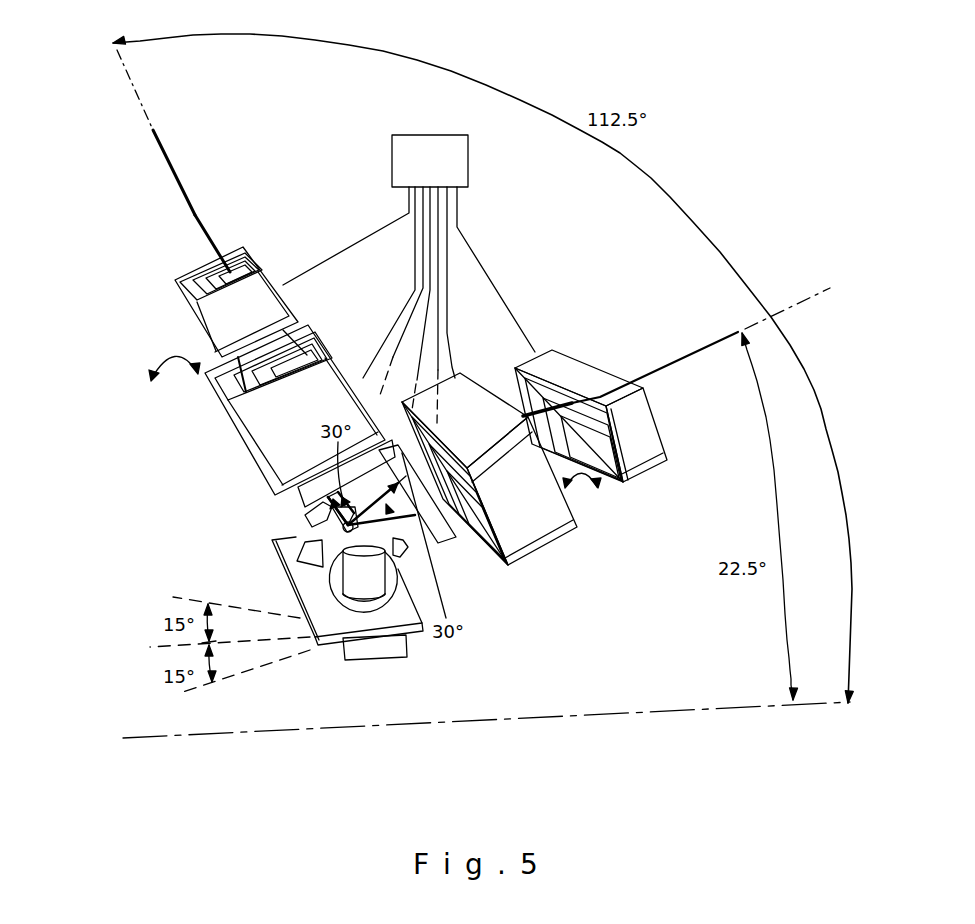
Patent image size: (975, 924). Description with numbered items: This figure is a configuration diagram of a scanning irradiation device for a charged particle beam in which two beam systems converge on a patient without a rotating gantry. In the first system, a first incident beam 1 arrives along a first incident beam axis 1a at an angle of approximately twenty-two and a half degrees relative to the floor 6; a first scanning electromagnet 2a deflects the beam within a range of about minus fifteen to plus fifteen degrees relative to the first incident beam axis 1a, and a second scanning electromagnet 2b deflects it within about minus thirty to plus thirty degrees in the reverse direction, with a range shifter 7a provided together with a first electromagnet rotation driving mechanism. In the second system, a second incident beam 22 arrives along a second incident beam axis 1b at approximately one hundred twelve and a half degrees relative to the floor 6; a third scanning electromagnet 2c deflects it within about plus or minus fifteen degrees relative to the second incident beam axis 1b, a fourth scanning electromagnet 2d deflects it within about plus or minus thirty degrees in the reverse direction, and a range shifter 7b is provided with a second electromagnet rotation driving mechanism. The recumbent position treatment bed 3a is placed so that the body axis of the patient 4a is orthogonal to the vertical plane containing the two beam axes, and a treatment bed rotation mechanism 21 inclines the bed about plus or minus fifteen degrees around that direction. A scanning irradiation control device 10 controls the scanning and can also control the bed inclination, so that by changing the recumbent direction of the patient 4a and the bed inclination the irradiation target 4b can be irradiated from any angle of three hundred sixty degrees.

The first incident beam 1 is at (665, 365).
The first incident beam axis 1a is at (692, 347).
The second incident beam axis 1b is at (182, 180).
The first scanning electromagnet 2a is at (660, 443).
The second scanning electromagnet 2b is at (550, 520).
The third scanning electromagnet 2c is at (212, 325).
The fourth scanning electromagnet 2d is at (275, 448).
The recumbent position treatment bed 3a is at (338, 610).
The patient 4a is at (278, 566).
The irradiation target 4b is at (305, 540).
The floor 6 is at (685, 710).
The range shifter 7a is at (453, 543).
The range shifter 7b is at (317, 513).
The scanning irradiation control device 10 is at (468, 160).
The treatment bed rotation mechanism 21 is at (407, 645).
The second incident beam 22 is at (207, 228).